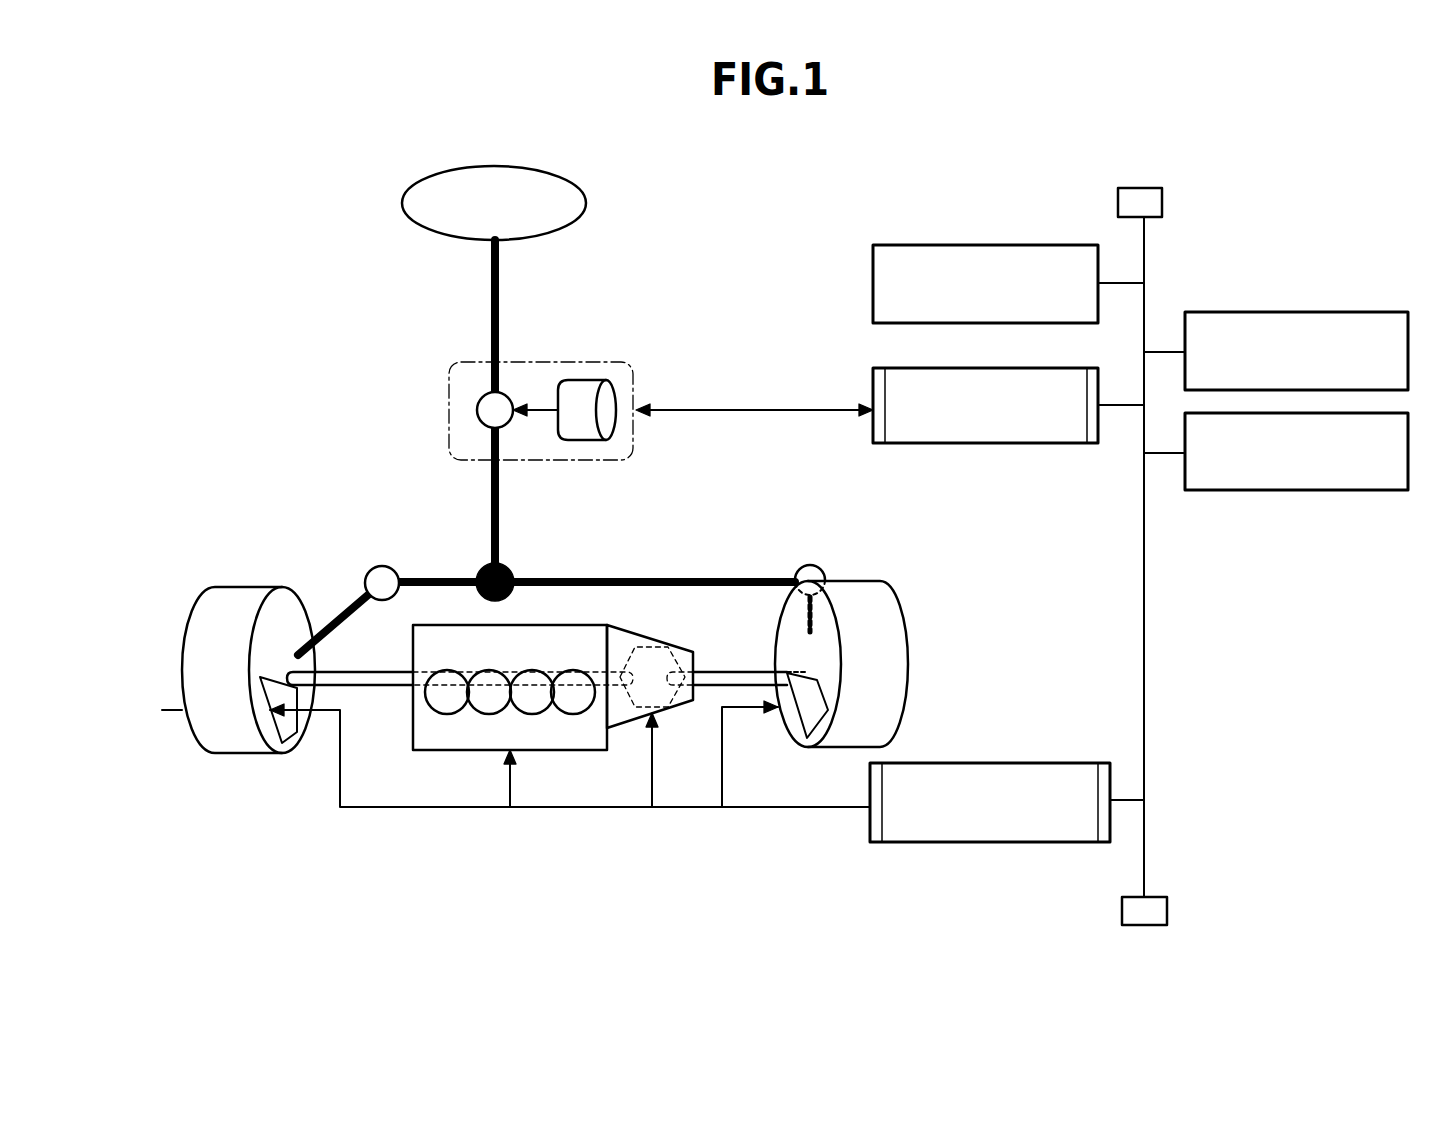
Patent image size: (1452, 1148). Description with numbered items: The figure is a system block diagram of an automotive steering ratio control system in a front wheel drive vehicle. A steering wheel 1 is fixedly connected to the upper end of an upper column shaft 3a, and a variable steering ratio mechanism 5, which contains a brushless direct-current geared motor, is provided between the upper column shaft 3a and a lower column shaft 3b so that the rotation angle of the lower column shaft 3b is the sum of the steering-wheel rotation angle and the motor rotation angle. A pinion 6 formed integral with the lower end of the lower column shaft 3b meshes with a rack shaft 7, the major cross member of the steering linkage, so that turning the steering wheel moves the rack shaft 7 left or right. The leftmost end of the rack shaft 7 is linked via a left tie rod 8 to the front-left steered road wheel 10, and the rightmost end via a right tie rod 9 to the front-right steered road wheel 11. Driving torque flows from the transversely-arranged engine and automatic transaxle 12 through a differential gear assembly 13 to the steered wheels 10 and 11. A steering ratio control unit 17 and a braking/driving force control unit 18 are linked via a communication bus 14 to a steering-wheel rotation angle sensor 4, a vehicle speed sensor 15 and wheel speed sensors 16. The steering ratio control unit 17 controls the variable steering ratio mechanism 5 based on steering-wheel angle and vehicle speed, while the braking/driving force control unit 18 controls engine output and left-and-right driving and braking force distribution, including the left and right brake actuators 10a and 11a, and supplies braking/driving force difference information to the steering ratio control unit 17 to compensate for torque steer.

The steering wheel 1 is at (402, 203).
The upper column shaft 3a is at (490, 308).
The lower column shaft 3b is at (490, 496).
The steering-wheel rotation angle sensor 4 is at (982, 245).
The variable steering ratio mechanism 5 is at (617, 362).
The pinion 6 is at (486, 574).
The rack shaft 7 is at (676, 578).
The left tie rod 8 is at (357, 602).
The right tie rod 9 is at (827, 608).
The front-left steered road wheel 10 is at (190, 612).
The left brake actuator 10a is at (296, 745).
The front-right steered road wheel 11 is at (905, 605).
The right brake actuator 11a is at (818, 712).
The engine and automatic transaxle 12 is at (608, 735).
The differential gear assembly 13 is at (684, 697).
The communication bus 14 is at (1145, 580).
The vehicle speed sensor 15 is at (1362, 312).
The wheel speed sensors 16 is at (1368, 492).
The steering ratio control unit 17 is at (985, 446).
The braking/driving force control unit 18 is at (1077, 763).